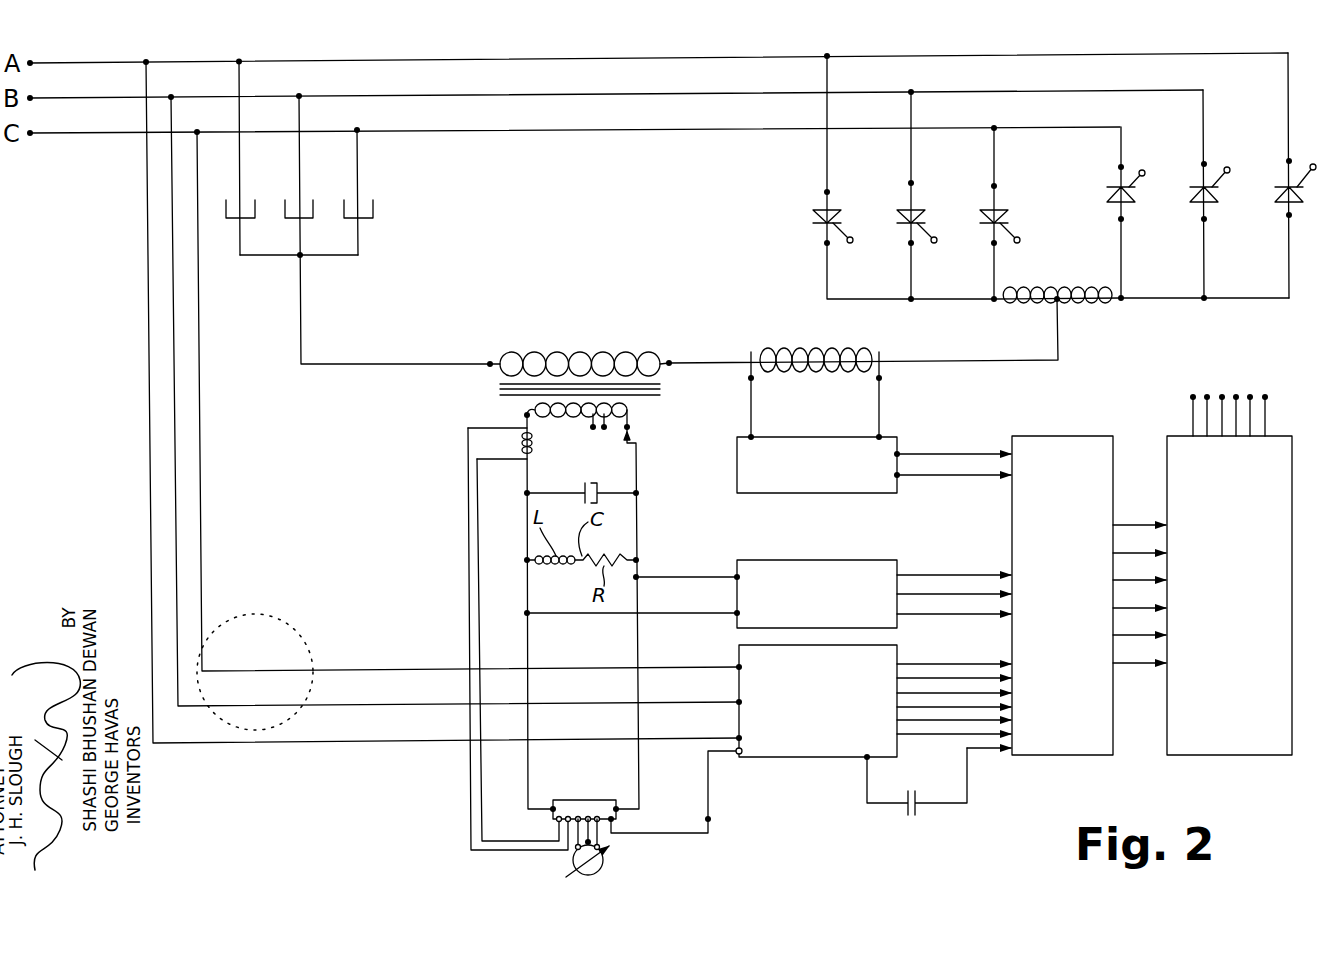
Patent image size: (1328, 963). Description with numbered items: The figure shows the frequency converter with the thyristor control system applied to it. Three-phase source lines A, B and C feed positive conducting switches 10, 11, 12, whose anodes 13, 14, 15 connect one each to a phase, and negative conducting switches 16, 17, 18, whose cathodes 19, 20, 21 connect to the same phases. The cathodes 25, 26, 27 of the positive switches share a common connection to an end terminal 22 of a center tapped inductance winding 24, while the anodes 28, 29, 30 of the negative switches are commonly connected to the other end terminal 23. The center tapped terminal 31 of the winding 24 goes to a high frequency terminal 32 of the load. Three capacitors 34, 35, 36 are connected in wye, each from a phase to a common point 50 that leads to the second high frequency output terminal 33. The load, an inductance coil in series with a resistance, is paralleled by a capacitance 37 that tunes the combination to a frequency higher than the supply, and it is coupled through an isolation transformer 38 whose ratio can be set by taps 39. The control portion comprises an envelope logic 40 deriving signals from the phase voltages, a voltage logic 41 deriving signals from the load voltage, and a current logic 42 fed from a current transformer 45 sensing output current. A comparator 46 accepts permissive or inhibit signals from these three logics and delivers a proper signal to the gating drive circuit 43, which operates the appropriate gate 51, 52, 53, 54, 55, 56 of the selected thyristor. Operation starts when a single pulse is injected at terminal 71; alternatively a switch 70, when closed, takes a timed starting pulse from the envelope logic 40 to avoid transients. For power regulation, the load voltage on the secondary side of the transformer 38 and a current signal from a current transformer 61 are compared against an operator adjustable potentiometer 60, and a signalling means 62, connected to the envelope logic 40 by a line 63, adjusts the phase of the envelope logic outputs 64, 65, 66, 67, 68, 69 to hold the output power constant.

The positive conducting switch 10 is at (843, 218).
The positive conducting switch 11 is at (927, 216).
The positive conducting switch 12 is at (1009, 223).
The anode 13 is at (826, 192).
The anode 14 is at (912, 183).
The anode 15 is at (995, 186).
The negative conducting switch 16 is at (1303, 200).
The negative conducting switch 17 is at (1218, 198).
The negative conducting switch 18 is at (1136, 198).
The cathode 19 is at (1288, 162).
The cathode 20 is at (1203, 165).
The cathode 21 is at (1120, 167).
The end terminal 22 is at (995, 301).
The end terminal 23 is at (1123, 300).
The center tapped inductance winding 24 is at (1082, 302).
The cathode 25 is at (826, 243).
The cathode 26 is at (852, 243).
The cathode 27 is at (937, 241).
The anode 28 is at (1288, 217).
The anode 29 is at (1203, 219).
The anode 30 is at (1120, 219).
The center tapped terminal 31 is at (1045, 304).
The high frequency terminal 32 is at (670, 362).
The second high frequency output terminal 33 is at (490, 363).
The capacitor 34 is at (256, 210).
The capacitor 35 is at (315, 210).
The capacitor 36 is at (375, 210).
The capacitance 37 is at (600, 486).
The isolation transformer 38 is at (500, 385).
The taps 39 is at (605, 429).
The envelope logic 40 is at (818, 701).
The voltage logic 41 is at (817, 594).
The current logic 42 is at (856, 493).
The gating drive circuit 43 is at (1229, 595).
The current transformer 45 is at (840, 352).
The comparator 46 is at (1062, 595).
The common point 50 is at (298, 257).
The gate 51 is at (850, 244).
The gate 52 is at (914, 246).
The gate 53 is at (1018, 244).
The gate 54 is at (1143, 170).
The gate 55 is at (1228, 168).
The gate 56 is at (1313, 165).
The operator adjustable potentiometer 60 is at (612, 860).
The current transformer 61 is at (534, 452).
The signalling means 62 is at (591, 800).
The line 63 is at (712, 819).
The envelope logic phase output 64 is at (910, 664).
The envelope logic phase output 65 is at (927, 678).
The envelope logic phase output 66 is at (957, 693).
The envelope logic phase output 67 is at (973, 708).
The envelope logic phase output 68 is at (940, 721).
The envelope logic phase output 69 is at (917, 735).
The switch 70 is at (908, 812).
The terminal 71 is at (1010, 757).